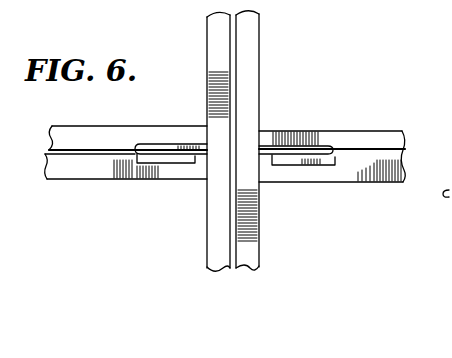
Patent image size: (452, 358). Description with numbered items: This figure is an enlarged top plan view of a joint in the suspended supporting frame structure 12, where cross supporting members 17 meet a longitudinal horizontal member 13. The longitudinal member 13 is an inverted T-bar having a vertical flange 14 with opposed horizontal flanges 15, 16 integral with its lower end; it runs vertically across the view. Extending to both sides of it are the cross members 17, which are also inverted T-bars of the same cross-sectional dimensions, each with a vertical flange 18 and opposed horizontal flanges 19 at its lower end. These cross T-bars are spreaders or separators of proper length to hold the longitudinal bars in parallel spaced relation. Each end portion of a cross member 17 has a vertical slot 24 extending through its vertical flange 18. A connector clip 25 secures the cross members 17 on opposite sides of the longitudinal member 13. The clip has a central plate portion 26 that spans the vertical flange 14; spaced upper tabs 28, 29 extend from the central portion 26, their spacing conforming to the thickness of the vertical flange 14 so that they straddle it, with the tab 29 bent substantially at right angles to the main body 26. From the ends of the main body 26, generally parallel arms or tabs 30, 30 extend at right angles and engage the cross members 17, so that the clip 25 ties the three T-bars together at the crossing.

The supporting frame structure 12 is at (264, 103).
The longitudinal horizontal member 13 is at (201, 252).
The vertical flange 14 is at (238, 29).
The horizontal flange 15 is at (207, 41).
The horizontal flange 16 is at (246, 52).
The cross supporting member 17 is at (100, 184).
The vertical flange 18 is at (376, 160).
The horizontal flange 19 is at (360, 130).
The vertical slot 24 is at (140, 156).
The connector clip 25 is at (189, 140).
The central plate portion 26 is at (168, 144).
The upper tab 28 is at (220, 151).
The upper tab 29 is at (239, 146).
The arm 30 is at (177, 164).